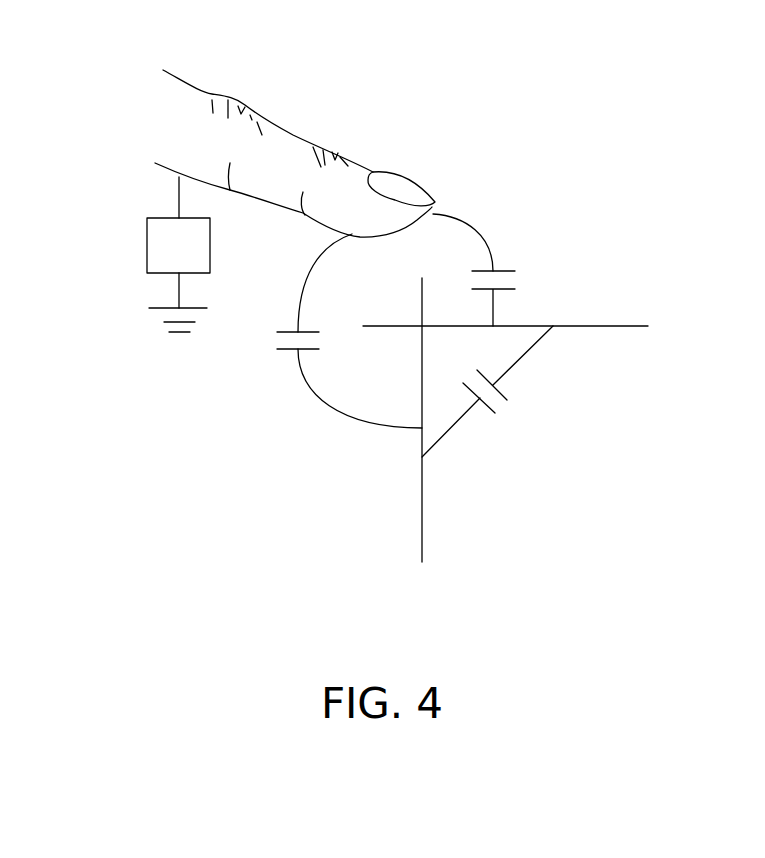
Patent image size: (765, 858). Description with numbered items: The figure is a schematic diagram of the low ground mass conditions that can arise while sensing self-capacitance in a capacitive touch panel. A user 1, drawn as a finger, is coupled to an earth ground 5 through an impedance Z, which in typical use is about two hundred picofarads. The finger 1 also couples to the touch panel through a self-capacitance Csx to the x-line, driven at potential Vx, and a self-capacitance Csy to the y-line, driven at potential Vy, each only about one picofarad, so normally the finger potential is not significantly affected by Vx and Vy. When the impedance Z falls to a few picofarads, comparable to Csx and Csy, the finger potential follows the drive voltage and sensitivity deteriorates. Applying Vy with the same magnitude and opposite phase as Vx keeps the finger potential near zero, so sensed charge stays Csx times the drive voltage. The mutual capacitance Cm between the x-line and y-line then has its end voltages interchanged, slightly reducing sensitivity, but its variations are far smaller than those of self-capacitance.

The user 1 is at (285, 142).
The earth ground 5 is at (163, 307).
The potential Vx is at (523, 327).
The potential Vy is at (420, 440).
The self-capacitance Csx is at (492, 270).
The self-capacitance Csy is at (332, 331).
The mutual capacitance Cm is at (487, 391).